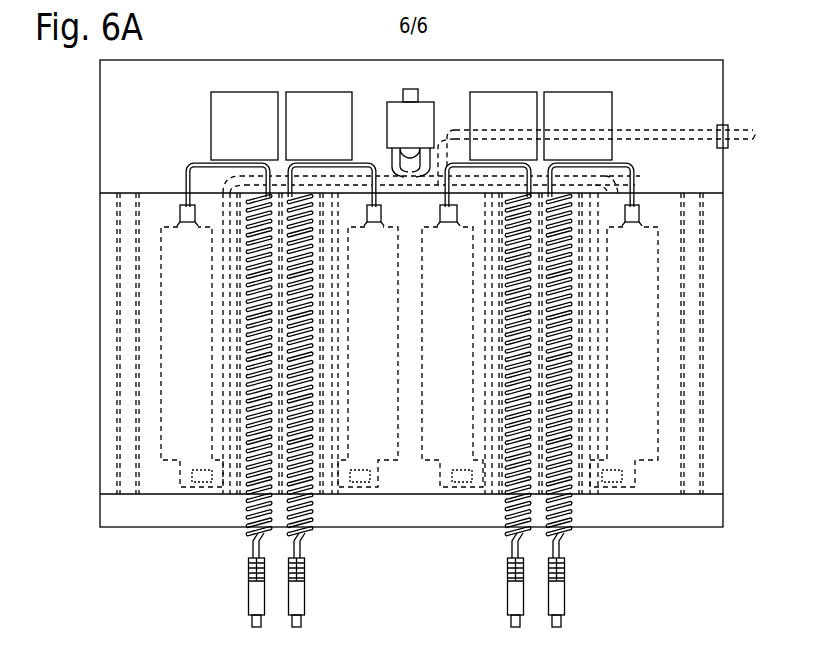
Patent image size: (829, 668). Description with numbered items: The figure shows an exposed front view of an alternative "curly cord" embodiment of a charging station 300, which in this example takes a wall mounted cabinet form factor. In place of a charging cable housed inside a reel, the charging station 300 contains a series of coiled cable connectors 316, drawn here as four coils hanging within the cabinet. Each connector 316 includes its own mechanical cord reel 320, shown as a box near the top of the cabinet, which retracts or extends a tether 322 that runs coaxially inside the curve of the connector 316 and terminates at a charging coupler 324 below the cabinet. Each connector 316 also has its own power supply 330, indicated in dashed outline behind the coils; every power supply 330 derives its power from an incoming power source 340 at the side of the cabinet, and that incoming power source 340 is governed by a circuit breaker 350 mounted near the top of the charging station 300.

The charging station 300 is at (723, 325).
The coiled cable connector 316 is at (243, 509).
The mechanical cord reel 320 is at (312, 92).
The tether 322 is at (263, 168).
The charging coupler 324 is at (258, 612).
The power supply 330 is at (386, 218).
The incoming power source 340 is at (728, 130).
The circuit breaker 350 is at (423, 112).